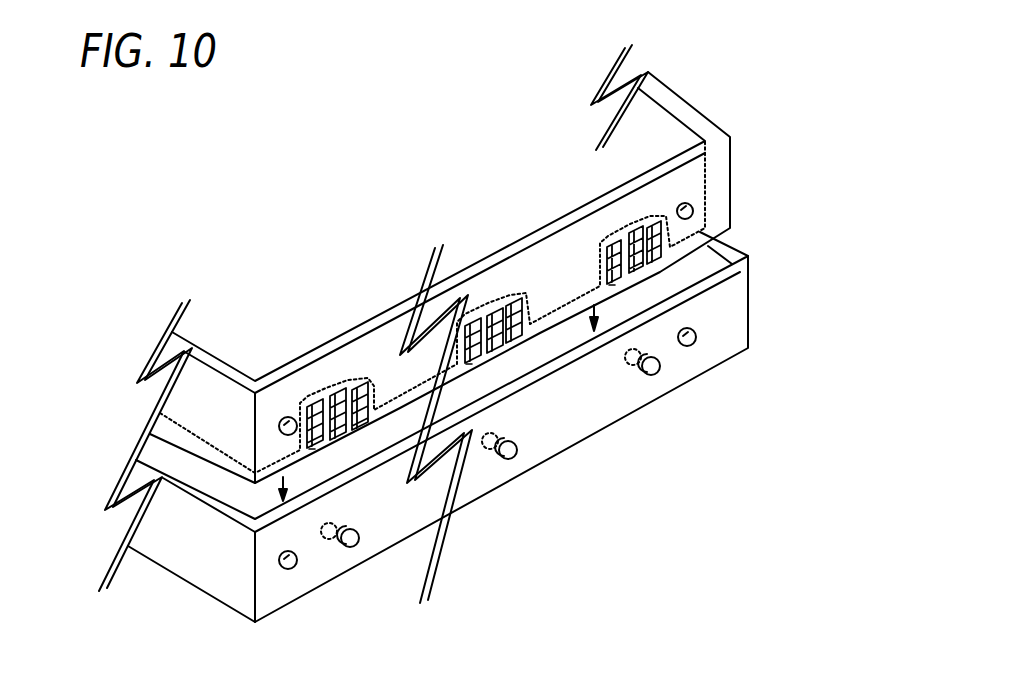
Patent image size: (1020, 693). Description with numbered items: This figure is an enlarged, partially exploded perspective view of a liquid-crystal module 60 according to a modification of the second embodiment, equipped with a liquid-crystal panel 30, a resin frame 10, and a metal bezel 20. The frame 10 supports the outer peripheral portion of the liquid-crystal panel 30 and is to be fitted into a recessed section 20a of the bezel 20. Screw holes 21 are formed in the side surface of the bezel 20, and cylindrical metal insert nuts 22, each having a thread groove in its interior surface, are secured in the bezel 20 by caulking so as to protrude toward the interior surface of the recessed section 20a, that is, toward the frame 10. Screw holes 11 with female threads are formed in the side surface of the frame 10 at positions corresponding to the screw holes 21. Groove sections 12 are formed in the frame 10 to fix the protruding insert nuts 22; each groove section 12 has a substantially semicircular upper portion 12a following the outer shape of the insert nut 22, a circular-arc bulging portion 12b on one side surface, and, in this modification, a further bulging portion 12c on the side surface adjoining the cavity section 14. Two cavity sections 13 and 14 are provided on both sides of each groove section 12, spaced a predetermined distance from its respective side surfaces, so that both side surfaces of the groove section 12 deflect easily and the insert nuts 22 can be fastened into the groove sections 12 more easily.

The frame 10 is at (722, 162).
The screw hole 11 is at (692, 214).
The groove section 12 is at (563, 418).
The upper portion 12a is at (366, 400).
The bulging portion 12b is at (366, 415).
The bulging portion 12c is at (358, 432).
The cavity section 13 is at (655, 232).
The cavity section 14 is at (314, 449).
The bezel 20 is at (736, 294).
The recessed section 20a is at (714, 258).
The screw hole 21 is at (287, 570).
The insert nut 22 is at (349, 549).
The liquid-crystal panel 30 is at (367, 218).
The liquid-crystal module 60 is at (716, 108).